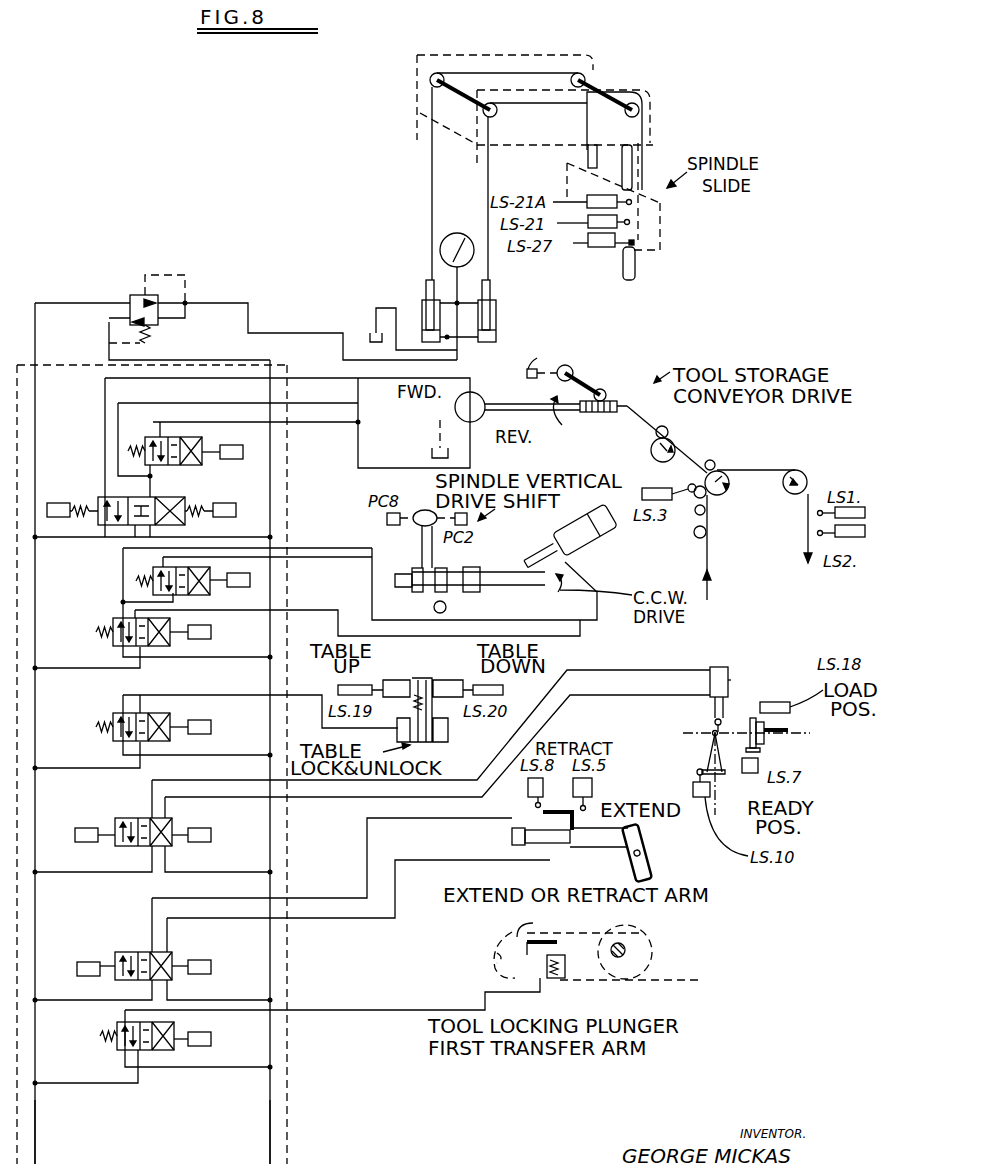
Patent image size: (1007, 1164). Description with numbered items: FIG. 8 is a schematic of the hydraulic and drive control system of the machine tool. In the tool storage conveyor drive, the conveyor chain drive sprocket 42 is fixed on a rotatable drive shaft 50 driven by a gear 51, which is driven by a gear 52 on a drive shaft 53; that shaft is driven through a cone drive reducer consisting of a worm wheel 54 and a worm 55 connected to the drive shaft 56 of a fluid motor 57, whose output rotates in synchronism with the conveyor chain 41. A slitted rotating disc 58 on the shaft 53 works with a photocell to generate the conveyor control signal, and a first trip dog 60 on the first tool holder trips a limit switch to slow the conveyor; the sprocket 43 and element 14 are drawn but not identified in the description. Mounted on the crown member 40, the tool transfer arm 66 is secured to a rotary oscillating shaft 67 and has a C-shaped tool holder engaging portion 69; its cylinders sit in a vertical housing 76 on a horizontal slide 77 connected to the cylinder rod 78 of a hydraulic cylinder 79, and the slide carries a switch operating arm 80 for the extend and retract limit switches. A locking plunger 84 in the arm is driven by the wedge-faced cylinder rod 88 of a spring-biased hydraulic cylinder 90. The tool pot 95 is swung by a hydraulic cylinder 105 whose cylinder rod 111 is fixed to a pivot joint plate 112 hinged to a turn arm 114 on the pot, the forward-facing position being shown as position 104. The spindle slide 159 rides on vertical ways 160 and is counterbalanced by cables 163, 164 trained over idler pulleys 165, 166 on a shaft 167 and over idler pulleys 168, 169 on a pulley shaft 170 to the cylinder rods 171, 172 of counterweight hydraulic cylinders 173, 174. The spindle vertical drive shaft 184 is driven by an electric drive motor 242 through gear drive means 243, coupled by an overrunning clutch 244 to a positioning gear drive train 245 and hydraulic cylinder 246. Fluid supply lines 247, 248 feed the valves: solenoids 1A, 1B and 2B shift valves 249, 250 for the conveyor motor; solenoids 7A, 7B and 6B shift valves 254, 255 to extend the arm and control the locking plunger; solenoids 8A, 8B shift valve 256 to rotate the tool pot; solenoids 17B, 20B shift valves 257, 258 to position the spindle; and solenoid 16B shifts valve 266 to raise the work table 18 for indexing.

The crown member 40 is at (510, 56).
The conveyor chain 41 is at (765, 470).
The conveyor chain drive sprocket 42 is at (722, 496).
The idler sprocket 43 is at (808, 478).
The drive shaft 50 is at (707, 465).
The gear 51 is at (652, 449).
The gear 52 is at (670, 428).
The drive shaft 53 is at (590, 380).
The worm wheel 54 is at (622, 396).
The worm 55 is at (590, 413).
The drive shaft 56 is at (530, 408).
The fluid motor 57 is at (455, 407).
The rotating disc 58 is at (570, 362).
The first trip dog 60 is at (717, 460).
The tool transfer arm 66 is at (640, 872).
The rotary oscillating shaft 67 is at (647, 852).
The C-shaped tool holder engaging portion 69 is at (500, 942).
The vertical housing 76 is at (719, 809).
The horizontal slide 77 is at (640, 824).
The cylinder rod 78 is at (562, 848).
The hydraulic cylinder 79 is at (512, 838).
The switch operating arm 80 is at (542, 815).
The locking plunger 84 is at (537, 936).
The cylinder rod 88 is at (572, 953).
The hydraulic cylinder 90 is at (550, 980).
The tool pot 95 is at (762, 745).
The dotted line position 104 is at (702, 770).
The hydraulic cylinder 105 is at (717, 664).
The cylinder rod 111 is at (715, 707).
The pivot joint plate 112 is at (717, 730).
The turn arm 114 is at (712, 733).
The tool transfer arm 14 is at (732, 675).
The work table 18 is at (407, 680).
The tool spindle slide 159 is at (662, 215).
The vertical ways 160 is at (600, 155).
The cable 163 is at (644, 128).
The cable 164 is at (587, 123).
The idler pulley 165 is at (639, 108).
The idler pulley 166 is at (584, 78).
The shaft 167 is at (598, 86).
The idler pulley 168 is at (484, 114).
The idler pulley 169 is at (430, 80).
The pulley shaft 170 is at (450, 88).
The cylinder rod 171 is at (495, 283).
The cylinder rod 172 is at (427, 283).
The counterweight hydraulic cylinder 173 is at (497, 313).
The counterweight hydraulic cylinder 174 is at (422, 307).
The spindle vertical drive shaft 184 is at (422, 545).
The electric drive motor 242 is at (434, 607).
The gear drive means 243 is at (463, 570).
The overrunning clutch 244 is at (472, 592).
The gear drive train 245 is at (527, 586).
The hydraulic cylinder 246 is at (570, 528).
The fluid supply line 247 is at (38, 1156).
The fluid supply line 248 is at (272, 1127).
The fluid control valve 249 is at (162, 500).
The fluid control valve 250 is at (166, 437).
The fluid control valve 254 is at (128, 952).
The fluid control valve 255 is at (117, 1029).
The valve 256 is at (127, 818).
The valve 257 is at (153, 576).
The valve 258 is at (113, 645).
The valve 266 is at (115, 715).
The solenoid 2B is at (228, 452).
The solenoid 1A is at (70, 511).
The solenoid 1B is at (214, 510).
The solenoid 20B is at (237, 582).
The solenoid 17B is at (202, 631).
The solenoid 16B is at (201, 726).
The solenoid 8A is at (87, 835).
The solenoid 8B is at (193, 835).
The solenoid 7A is at (89, 966).
The solenoid 7B is at (199, 966).
The solenoid 6B is at (197, 1040).